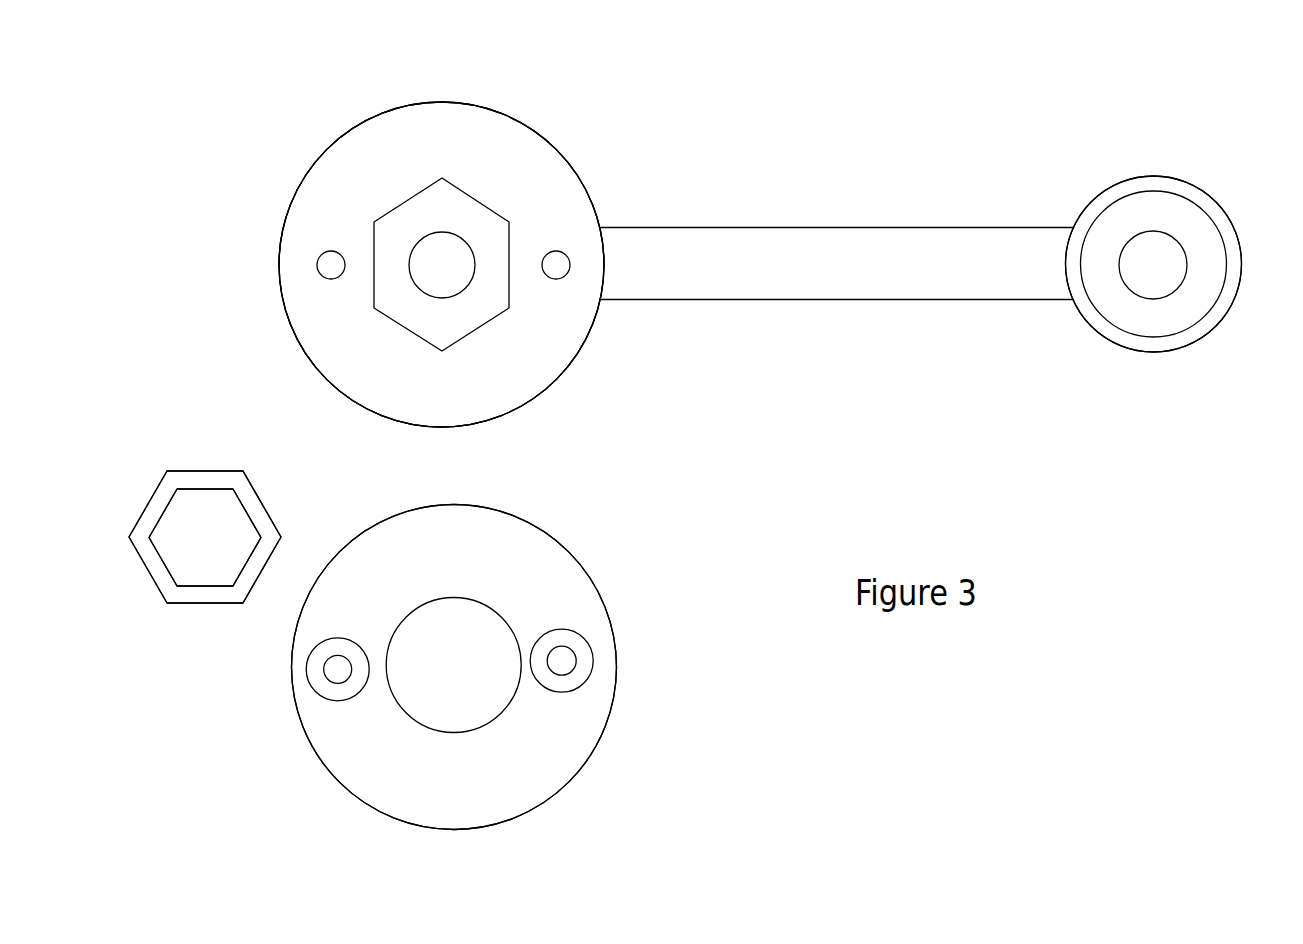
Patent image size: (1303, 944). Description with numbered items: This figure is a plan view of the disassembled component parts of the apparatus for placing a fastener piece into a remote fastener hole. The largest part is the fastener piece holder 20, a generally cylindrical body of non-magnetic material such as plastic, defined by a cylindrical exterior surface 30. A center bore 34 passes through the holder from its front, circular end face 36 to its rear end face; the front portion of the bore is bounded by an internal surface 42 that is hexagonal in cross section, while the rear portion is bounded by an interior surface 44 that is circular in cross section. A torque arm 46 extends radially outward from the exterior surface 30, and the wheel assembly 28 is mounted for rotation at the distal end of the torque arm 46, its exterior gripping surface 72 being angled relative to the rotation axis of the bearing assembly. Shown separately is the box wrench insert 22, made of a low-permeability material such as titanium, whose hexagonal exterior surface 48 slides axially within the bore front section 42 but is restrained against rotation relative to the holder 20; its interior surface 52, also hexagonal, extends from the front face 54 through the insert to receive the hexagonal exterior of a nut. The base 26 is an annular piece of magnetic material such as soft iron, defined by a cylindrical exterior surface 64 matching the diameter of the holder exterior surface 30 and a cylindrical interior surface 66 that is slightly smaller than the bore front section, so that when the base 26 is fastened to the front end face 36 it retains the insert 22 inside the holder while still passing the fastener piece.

The fastener piece holder 20 is at (582, 168).
The box wrench insert 22 is at (155, 508).
The base 26 is at (558, 573).
The wheel assembly 28 is at (1195, 298).
The cylindrical exterior surface 30 is at (312, 167).
The center bore 34 is at (435, 277).
The front end face 36 is at (492, 132).
The internal surface of bore front portion 42 is at (374, 258).
The interior surface of bore rear portion 44 is at (415, 246).
The torque arm 46 is at (847, 246).
The exterior surface of insert 48 is at (150, 572).
The interior surface of insert 52 is at (167, 566).
The front face of insert 54 is at (205, 482).
The cylindrical exterior surface of base 64 is at (583, 762).
The cylindrical interior surface of base 66 is at (450, 728).
The exterior gripping surface 72 is at (1162, 344).